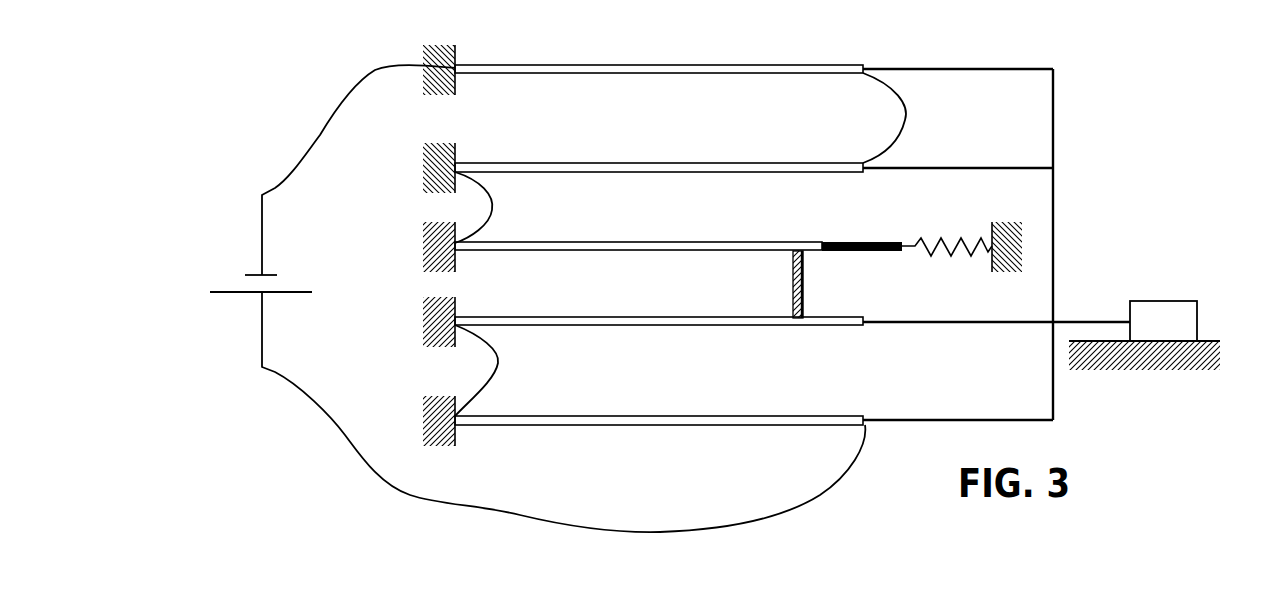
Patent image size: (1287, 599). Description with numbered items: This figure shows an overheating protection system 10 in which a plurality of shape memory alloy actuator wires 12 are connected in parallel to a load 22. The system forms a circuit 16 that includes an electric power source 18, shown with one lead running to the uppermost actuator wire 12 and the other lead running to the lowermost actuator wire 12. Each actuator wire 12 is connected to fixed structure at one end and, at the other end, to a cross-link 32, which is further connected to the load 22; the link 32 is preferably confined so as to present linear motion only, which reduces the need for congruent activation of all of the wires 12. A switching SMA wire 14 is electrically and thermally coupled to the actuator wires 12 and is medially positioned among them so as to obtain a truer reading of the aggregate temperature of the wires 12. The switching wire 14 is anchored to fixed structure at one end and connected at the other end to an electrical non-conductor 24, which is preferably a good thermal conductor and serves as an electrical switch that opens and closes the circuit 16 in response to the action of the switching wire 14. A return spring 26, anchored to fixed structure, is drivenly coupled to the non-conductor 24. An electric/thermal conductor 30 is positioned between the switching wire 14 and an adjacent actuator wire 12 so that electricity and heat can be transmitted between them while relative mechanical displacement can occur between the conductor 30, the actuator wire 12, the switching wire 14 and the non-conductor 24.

The overheating protection system 10 is at (1128, 103).
The shape memory alloy actuator wire 12 is at (626, 66).
The switching SMA wire 14 is at (634, 198).
The circuit 16 is at (376, 65).
The electric power source 18 is at (232, 294).
The load 22 is at (1198, 322).
The electrical non-conductor 24 is at (873, 243).
The return spring 26 is at (963, 243).
The electric/thermal conductor 30 is at (793, 287).
The cross-link 32 is at (1055, 251).